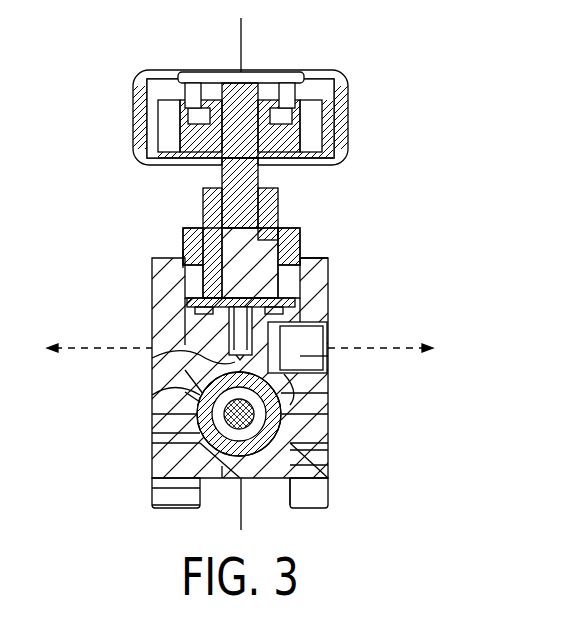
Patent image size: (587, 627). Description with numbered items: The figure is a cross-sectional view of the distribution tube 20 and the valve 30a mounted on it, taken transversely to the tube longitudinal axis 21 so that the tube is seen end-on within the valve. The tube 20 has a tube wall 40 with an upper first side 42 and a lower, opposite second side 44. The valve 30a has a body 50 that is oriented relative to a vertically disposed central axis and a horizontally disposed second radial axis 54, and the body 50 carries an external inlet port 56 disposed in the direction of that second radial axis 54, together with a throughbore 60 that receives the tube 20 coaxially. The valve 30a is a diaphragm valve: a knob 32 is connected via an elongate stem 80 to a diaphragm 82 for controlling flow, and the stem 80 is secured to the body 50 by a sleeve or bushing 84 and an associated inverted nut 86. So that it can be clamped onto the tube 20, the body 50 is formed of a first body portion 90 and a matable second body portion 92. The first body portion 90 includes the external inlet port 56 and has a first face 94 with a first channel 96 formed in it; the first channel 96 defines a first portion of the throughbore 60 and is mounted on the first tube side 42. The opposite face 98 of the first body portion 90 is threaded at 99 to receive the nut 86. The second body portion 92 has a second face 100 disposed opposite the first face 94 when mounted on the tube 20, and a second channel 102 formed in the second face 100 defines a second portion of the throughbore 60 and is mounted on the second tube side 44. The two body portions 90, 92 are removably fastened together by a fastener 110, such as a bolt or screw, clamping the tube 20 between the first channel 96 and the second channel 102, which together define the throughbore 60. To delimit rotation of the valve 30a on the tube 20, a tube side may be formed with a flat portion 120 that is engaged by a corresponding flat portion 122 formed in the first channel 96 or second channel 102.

The distribution tube 20 is at (158, 453).
The longitudinal axis 21 is at (328, 362).
The valve 30a is at (466, 90).
The knob 32 is at (343, 78).
The tube wall 40 is at (281, 418).
The first side 42 is at (152, 356).
The second side 44 is at (224, 468).
The body 50 is at (357, 243).
The second radial axis 54 is at (82, 346).
The external inlet port 56 is at (334, 332).
The throughbore 60 is at (253, 474).
The stem 80 is at (256, 175).
The diaphragm 82 is at (292, 306).
The bushing 84 is at (204, 198).
The inverted nut 86 is at (178, 232).
The first body portion 90 is at (320, 271).
The second body portion 92 is at (333, 472).
The first face 94 is at (152, 433).
The first channel 96 is at (185, 401).
The opposite face 98 is at (307, 261).
The threads 99 is at (184, 264).
The second face 100 is at (328, 393).
The second channel 102 is at (156, 483).
The fastener 110 is at (157, 506).
The flat portion 120 is at (328, 466).
The flat portion 122 is at (328, 449).